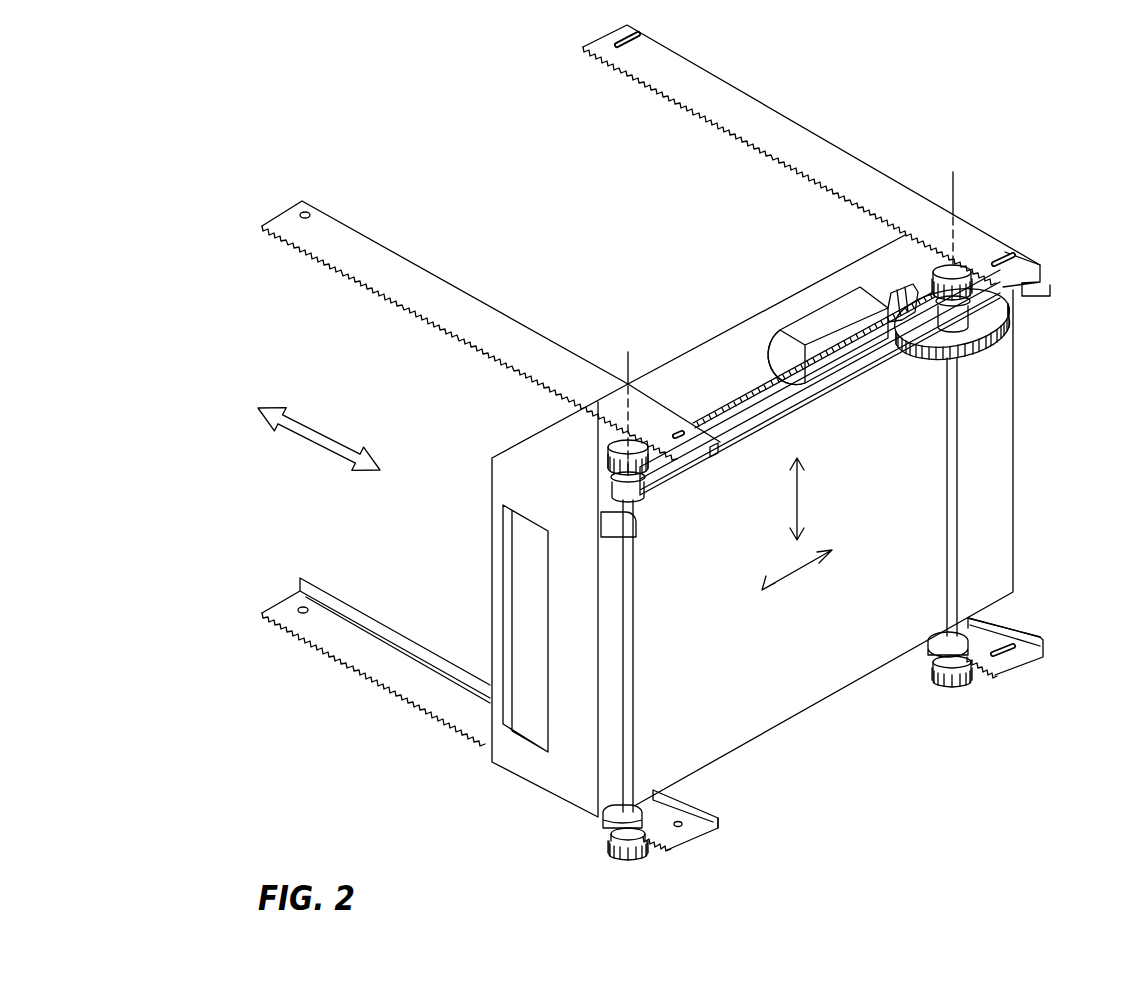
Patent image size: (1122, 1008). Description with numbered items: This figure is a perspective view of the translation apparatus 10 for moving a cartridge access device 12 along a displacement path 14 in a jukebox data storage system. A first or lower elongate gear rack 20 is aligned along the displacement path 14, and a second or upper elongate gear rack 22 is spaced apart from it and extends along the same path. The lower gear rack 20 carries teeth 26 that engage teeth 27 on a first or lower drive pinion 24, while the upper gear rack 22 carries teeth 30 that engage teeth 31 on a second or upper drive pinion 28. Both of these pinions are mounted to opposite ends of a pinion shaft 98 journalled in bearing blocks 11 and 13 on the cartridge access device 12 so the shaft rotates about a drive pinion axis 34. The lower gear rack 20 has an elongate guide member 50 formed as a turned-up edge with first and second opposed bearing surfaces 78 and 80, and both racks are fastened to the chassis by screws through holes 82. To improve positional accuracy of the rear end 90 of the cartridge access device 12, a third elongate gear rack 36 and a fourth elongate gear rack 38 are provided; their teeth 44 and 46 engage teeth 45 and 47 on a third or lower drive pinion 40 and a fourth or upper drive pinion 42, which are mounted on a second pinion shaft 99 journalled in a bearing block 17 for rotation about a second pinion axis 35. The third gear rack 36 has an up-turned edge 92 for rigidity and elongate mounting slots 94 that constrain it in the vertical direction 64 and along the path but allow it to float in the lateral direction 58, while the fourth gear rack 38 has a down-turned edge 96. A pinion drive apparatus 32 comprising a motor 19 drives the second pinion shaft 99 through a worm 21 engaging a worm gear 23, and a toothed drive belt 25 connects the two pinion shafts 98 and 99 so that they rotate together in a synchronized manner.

The translation apparatus 10 is at (398, 122).
The bearing block 11 is at (601, 826).
The cartridge access device 12 is at (482, 571).
The bearing block 13 is at (640, 526).
The displacement path 14 is at (318, 450).
The bearing block 17 is at (966, 362).
The motor 19 is at (826, 292).
The first or lower elongate gear rack 20 is at (345, 658).
The worm 21 is at (895, 284).
The second or upper elongate gear rack 22 is at (446, 312).
The worm gear 23 is at (987, 340).
The first or lower drive pinion 24 is at (600, 858).
The toothed drive belt 25 is at (846, 396).
The teeth 26 is at (364, 678).
The teeth 27 is at (630, 862).
The second or upper drive pinion 28 is at (598, 442).
The teeth 30 is at (372, 300).
The teeth 31 is at (610, 463).
The pinion drive apparatus 32 is at (784, 312).
The drive pinion axis 34 is at (628, 352).
The second pinion axis 35 is at (956, 180).
The third elongate gear rack 36 is at (1026, 676).
The fourth elongate gear rack 38 is at (839, 166).
The third or lower drive pinion 40 is at (918, 686).
The fourth or upper drive pinion 42 is at (966, 245).
The teeth 44 is at (988, 668).
The teeth 45 is at (955, 660).
The teeth 46 is at (632, 74).
The teeth 47 is at (1012, 246).
The elongate guide member 50 is at (714, 838).
The transverse or lateral direction 58 is at (798, 580).
The vertical direction 64 is at (806, 497).
The first bearing surface 78 is at (712, 822).
The second bearing surface 80 is at (721, 825).
The holes 82 is at (308, 215).
The rear end 90 is at (1016, 441).
The up-turned edge 92 is at (1036, 626).
The elongate mounting holes or slots 94 is at (644, 44).
The down-turned edge 96 is at (1047, 289).
The pinion shaft 98 is at (638, 674).
The second pinion shaft 99 is at (946, 527).